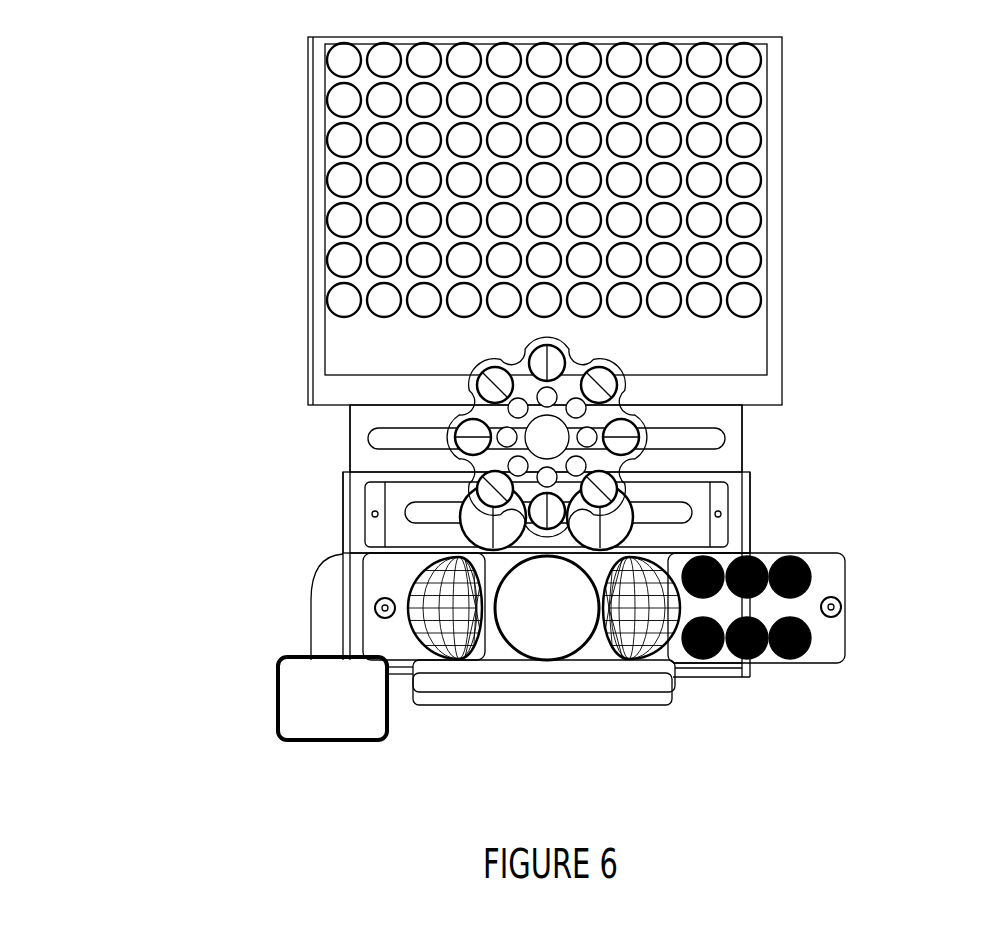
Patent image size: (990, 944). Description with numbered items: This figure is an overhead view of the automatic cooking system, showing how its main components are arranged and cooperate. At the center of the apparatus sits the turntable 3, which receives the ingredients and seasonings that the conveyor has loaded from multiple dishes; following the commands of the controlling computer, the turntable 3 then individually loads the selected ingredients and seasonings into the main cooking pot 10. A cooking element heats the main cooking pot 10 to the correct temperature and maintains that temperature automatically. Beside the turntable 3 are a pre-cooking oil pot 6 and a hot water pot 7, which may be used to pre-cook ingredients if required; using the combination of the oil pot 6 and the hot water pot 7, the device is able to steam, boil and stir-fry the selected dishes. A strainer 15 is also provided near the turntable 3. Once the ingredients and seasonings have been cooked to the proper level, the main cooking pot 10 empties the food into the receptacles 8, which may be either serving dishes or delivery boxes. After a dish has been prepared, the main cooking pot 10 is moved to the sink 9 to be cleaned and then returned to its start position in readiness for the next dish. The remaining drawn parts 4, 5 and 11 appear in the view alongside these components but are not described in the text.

The rotor carousel 3 is at (495, 420).
The sample container 4 is at (600, 387).
The upper guide slot panel 5 is at (363, 463).
The lower guide slot 6 is at (687, 497).
The transfer bar 7 is at (368, 535).
The reagent block 8 is at (812, 560).
The mixer housing 9 is at (385, 638).
The tray 10 is at (598, 690).
The connector 11 is at (678, 688).
The rotor cups 15 is at (465, 497).